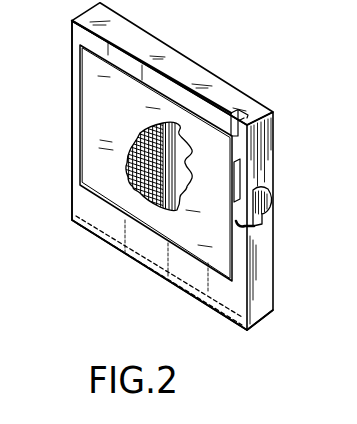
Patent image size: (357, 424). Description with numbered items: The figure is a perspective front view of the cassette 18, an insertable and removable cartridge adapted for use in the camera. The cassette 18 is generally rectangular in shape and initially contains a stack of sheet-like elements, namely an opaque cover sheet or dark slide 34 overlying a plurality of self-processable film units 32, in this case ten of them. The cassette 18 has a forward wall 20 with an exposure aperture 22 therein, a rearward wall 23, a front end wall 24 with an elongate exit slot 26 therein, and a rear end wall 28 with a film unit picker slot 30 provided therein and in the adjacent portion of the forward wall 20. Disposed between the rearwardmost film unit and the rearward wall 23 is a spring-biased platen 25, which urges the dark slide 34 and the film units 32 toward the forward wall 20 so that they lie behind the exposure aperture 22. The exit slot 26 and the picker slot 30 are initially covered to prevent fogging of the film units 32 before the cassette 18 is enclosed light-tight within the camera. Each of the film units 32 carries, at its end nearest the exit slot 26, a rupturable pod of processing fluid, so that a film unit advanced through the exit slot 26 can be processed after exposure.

The cassette 18 is at (262, 247).
The forward wall 20 is at (82, 202).
The exposure aperture 22 is at (91, 136).
The rearward wall 23 is at (188, 178).
The front end wall 24 is at (263, 323).
The spring-biased platen 25 is at (183, 141).
The exit slot 26 is at (160, 276).
The rear end wall 28 is at (142, 38).
The film unit picker slot 30 is at (235, 113).
The self-processable film units 32 is at (270, 206).
The dark slide 34 is at (127, 132).